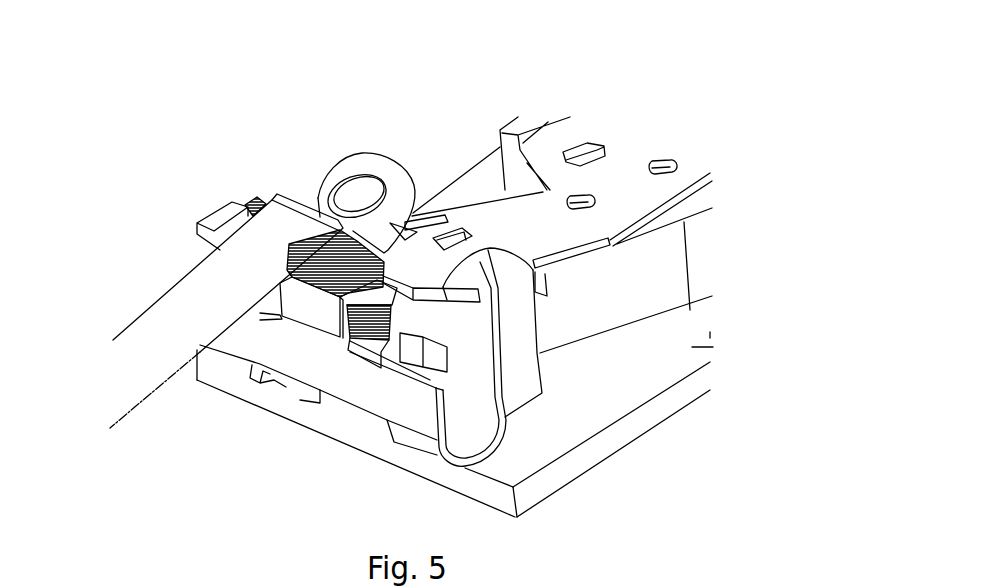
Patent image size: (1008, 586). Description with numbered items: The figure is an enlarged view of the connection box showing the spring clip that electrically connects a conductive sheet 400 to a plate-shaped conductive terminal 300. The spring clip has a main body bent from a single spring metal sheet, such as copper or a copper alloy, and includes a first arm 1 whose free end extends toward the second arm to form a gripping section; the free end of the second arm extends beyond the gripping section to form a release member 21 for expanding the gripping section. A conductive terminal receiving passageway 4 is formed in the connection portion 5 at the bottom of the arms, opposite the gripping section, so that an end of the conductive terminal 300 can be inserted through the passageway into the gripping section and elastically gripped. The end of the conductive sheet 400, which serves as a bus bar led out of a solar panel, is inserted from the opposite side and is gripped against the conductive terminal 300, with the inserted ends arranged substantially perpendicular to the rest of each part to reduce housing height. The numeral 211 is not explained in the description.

The first arm 1 is at (252, 343).
The conductive terminal receiving passageway 4 is at (338, 418).
The connection portion 5 is at (413, 438).
The release member 21 is at (350, 160).
The terminal portion 211 is at (239, 582).
The conductive terminal 300 is at (248, 196).
The conductive sheet 400 is at (133, 330).